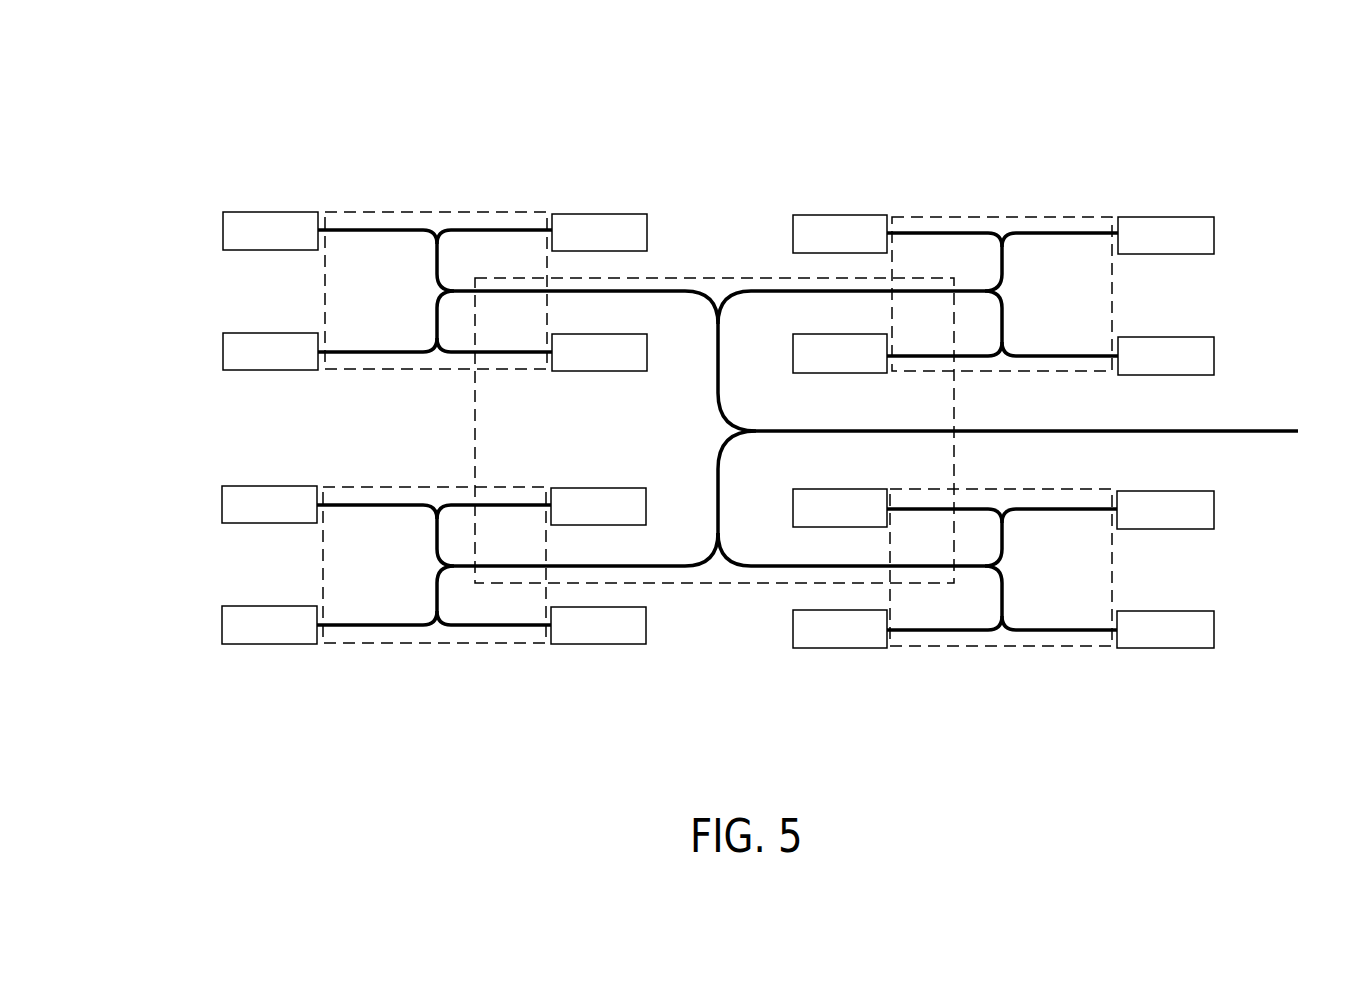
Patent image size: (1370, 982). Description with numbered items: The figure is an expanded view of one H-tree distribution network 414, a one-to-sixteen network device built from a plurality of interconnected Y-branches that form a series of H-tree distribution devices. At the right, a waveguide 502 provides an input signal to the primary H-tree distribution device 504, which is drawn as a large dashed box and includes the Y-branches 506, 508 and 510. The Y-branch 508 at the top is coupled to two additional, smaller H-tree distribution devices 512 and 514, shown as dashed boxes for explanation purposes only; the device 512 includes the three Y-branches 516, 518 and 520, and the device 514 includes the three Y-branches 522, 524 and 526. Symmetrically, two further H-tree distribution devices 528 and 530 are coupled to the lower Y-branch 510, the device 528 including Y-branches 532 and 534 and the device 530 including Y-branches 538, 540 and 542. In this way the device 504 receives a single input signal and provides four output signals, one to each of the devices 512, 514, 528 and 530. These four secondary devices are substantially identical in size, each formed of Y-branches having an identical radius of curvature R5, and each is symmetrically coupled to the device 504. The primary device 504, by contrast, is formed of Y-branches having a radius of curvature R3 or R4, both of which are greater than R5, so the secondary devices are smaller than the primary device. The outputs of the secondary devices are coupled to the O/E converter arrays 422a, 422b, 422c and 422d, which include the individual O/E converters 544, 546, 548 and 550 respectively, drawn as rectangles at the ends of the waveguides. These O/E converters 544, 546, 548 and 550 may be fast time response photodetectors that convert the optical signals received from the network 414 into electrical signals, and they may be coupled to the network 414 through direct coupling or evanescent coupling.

The network 414 is at (908, 77).
The O/E converter array 422a is at (245, 188).
The O/E converter array 422b is at (555, 188).
The O/E converter array 422c is at (815, 189).
The O/E converter array 422d is at (1152, 191).
The waveguide 502 is at (1257, 436).
The H-tree distribution device 504 is at (955, 410).
The Y-branch 506 is at (714, 430).
The Y-branch 508 is at (720, 297).
The Y-branch 510 is at (718, 563).
The H-tree distribution device 512 is at (323, 300).
The H-tree distribution device 514 is at (1112, 295).
The Y-branch 516 is at (431, 290).
The Y-branch 518 is at (438, 227).
The Y-branch 520 is at (437, 356).
The Y-branch 522 is at (1008, 293).
The Y-branch 524 is at (1002, 230).
The Y-branch 526 is at (1002, 361).
The H-tree distribution device 528 is at (323, 575).
The H-tree distribution device 530 is at (1112, 570).
The Y-branch 532 is at (431, 565).
The Y-branch 534 is at (437, 502).
The Y-branch 538 is at (1008, 568).
The Y-branch 540 is at (1000, 504).
The Y-branch 542 is at (1000, 634).
The O/E converter 544 is at (262, 212).
The O/E converter 546 is at (592, 214).
The O/E converter 548 is at (832, 215).
The O/E converter 550 is at (1170, 217).
The radius of curvature R3 is at (736, 413).
The radius of curvature R4 is at (701, 311).
The radius of curvature R5 is at (448, 279).